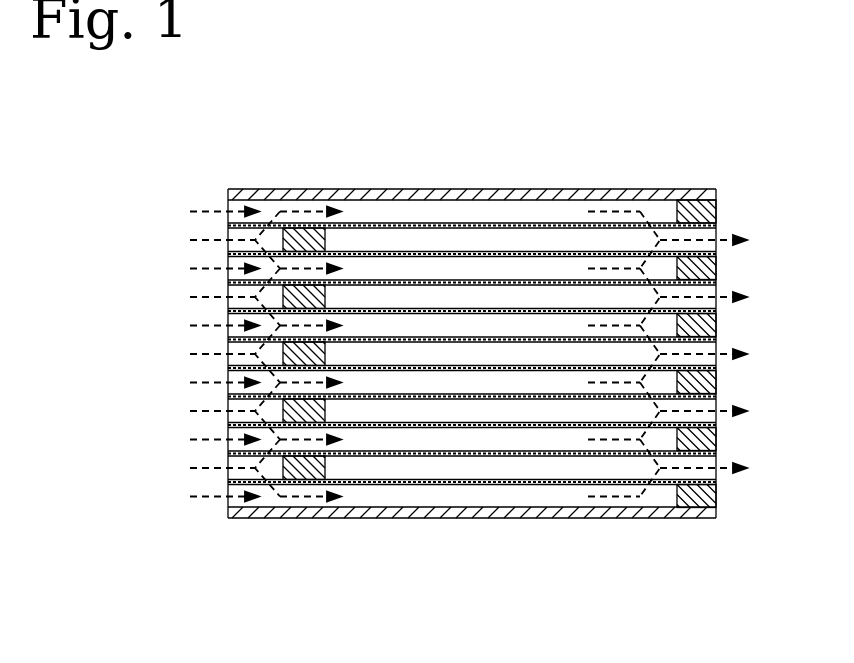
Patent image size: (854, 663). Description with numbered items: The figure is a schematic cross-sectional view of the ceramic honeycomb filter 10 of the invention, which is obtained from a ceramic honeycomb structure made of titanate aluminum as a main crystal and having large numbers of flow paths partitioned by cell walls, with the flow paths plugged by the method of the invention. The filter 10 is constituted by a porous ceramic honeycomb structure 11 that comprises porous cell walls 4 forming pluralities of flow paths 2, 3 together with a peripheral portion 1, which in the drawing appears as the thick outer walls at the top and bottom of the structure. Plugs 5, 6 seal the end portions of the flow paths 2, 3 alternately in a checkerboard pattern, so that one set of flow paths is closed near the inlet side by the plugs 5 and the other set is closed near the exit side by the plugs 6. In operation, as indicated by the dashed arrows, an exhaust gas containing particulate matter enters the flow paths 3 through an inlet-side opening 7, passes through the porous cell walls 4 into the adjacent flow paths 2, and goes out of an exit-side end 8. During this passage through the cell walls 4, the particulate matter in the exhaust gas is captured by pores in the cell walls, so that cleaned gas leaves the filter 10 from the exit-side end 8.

The ceramic honeycomb filter 10 is at (209, 158).
The peripheral portion 1 is at (660, 197).
The porous ceramic honeycomb structure 11 is at (446, 190).
The flow paths 2 is at (701, 303).
The flow paths 3 is at (235, 322).
The cell walls 4 is at (248, 212).
The plugs 5 is at (298, 470).
The plugs 6 is at (704, 495).
The inlet-side opening 7 is at (232, 464).
The exit-side end 8 is at (718, 470).